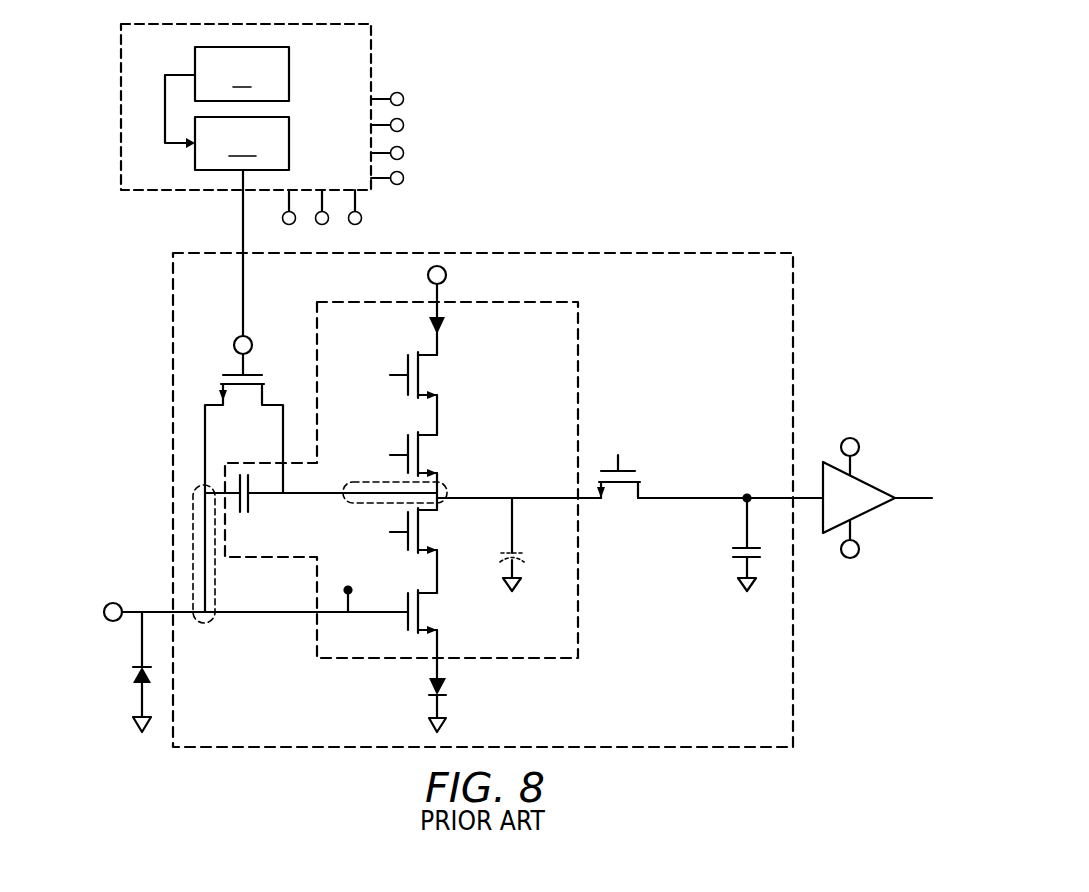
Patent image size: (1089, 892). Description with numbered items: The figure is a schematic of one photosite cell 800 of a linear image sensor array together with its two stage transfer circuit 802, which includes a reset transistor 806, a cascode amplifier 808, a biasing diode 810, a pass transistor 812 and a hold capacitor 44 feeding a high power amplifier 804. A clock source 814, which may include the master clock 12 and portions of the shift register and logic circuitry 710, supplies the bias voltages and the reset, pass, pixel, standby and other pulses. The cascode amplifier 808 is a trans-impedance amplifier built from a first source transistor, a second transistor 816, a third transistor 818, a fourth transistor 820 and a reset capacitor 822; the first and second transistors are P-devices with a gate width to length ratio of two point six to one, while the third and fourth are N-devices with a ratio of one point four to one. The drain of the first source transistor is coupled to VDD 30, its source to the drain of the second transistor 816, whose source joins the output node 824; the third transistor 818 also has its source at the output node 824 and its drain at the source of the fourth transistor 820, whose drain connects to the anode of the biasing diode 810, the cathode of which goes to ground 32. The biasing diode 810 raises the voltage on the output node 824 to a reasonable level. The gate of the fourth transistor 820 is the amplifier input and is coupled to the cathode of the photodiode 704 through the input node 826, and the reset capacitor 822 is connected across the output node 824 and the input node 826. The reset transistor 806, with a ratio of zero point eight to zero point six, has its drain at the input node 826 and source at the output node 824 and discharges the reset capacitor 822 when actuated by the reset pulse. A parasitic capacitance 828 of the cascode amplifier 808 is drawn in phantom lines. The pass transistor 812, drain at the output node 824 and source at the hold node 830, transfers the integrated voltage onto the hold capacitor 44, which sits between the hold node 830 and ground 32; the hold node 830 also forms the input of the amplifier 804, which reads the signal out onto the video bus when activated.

The master clock 12 is at (242, 74).
The VDD 30 is at (427, 278).
The ground 32 is at (132, 723).
The hold capacitor CH 44 is at (761, 556).
The photodiode 704 is at (132, 681).
The shift register and logic circuitry 710 is at (242, 143).
The cell 800 is at (663, 196).
The two stage transfer circuit 802 is at (727, 252).
The amplifier 804 is at (868, 482).
The reset transistor 806 is at (232, 372).
The cascode amplifier 808 is at (579, 352).
The biasing diode 810 is at (428, 685).
The pass transistor 812 is at (636, 470).
The clock source 814 is at (293, 211).
The second transistor 816 is at (406, 443).
The third transistor 818 is at (406, 522).
The fourth transistor 820 is at (407, 602).
The reset capacitor CR 822 is at (251, 497).
The output node 824 is at (447, 500).
The input node 826 is at (216, 621).
The parasitic capacitance 828 is at (518, 562).
The hold node 830 is at (749, 492).